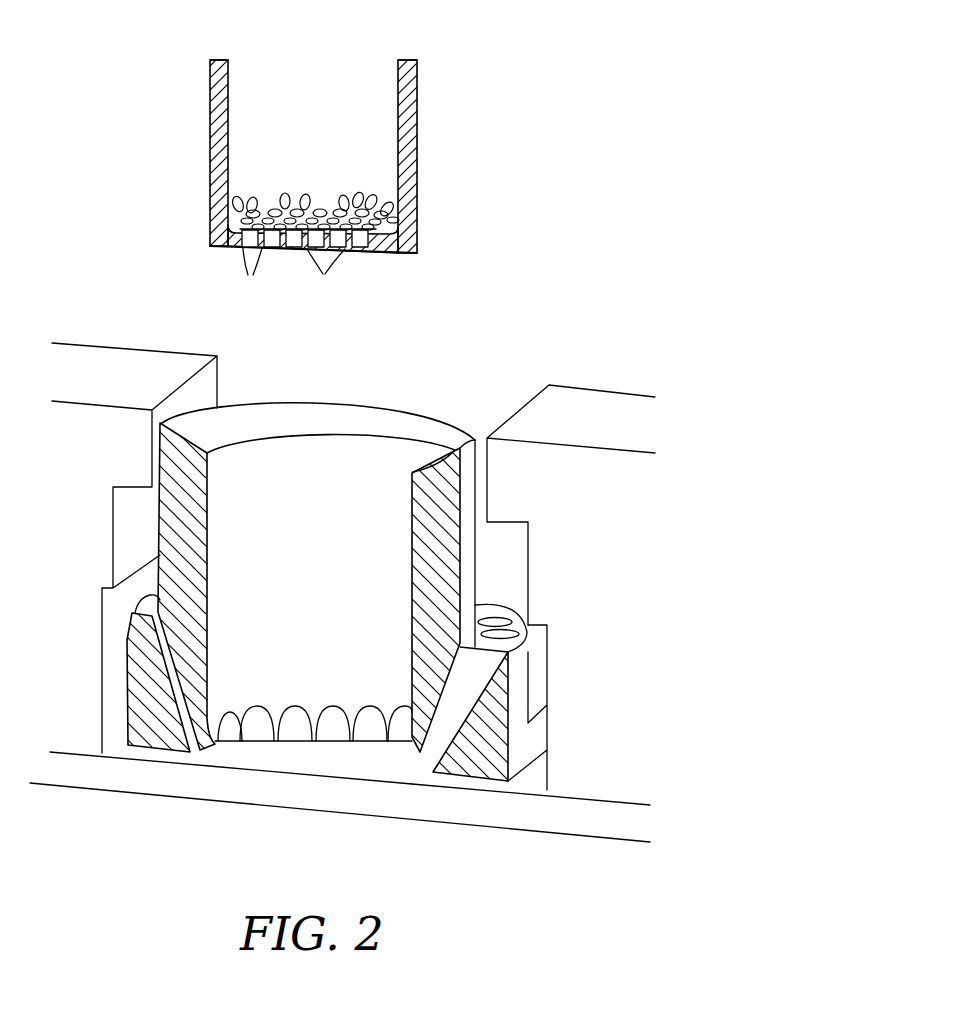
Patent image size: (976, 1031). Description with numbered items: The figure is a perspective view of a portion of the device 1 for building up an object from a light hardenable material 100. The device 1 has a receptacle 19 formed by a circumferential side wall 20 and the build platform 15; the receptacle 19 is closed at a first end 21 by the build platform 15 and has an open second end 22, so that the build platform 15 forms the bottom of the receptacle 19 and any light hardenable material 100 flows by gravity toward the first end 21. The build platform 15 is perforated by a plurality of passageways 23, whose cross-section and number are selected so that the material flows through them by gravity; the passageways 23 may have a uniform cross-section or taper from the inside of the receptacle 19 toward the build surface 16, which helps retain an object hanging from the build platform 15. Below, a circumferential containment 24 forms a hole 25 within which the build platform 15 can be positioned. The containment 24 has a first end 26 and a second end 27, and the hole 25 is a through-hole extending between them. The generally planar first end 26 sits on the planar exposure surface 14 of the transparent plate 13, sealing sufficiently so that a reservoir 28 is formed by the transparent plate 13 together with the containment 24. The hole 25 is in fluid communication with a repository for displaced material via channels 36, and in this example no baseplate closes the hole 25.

The device 1 is at (553, 155).
The transparent plate 13 is at (635, 820).
The exposure surface 14 is at (338, 762).
The build platform 15 is at (418, 243).
The build surface 16 is at (398, 254).
The receptacle 19 is at (383, 127).
The circumferential side wall 20 is at (210, 138).
The first end 21 is at (220, 247).
The second end 22 is at (219, 52).
The passageways 23 is at (291, 278).
The circumferential containment 24 is at (448, 455).
The hole 25 is at (362, 472).
The first end 26 is at (487, 790).
The second end 27 is at (405, 405).
The reservoir 28 is at (263, 678).
The channels 36 is at (160, 690).
The light hardenable material 100 is at (322, 190).